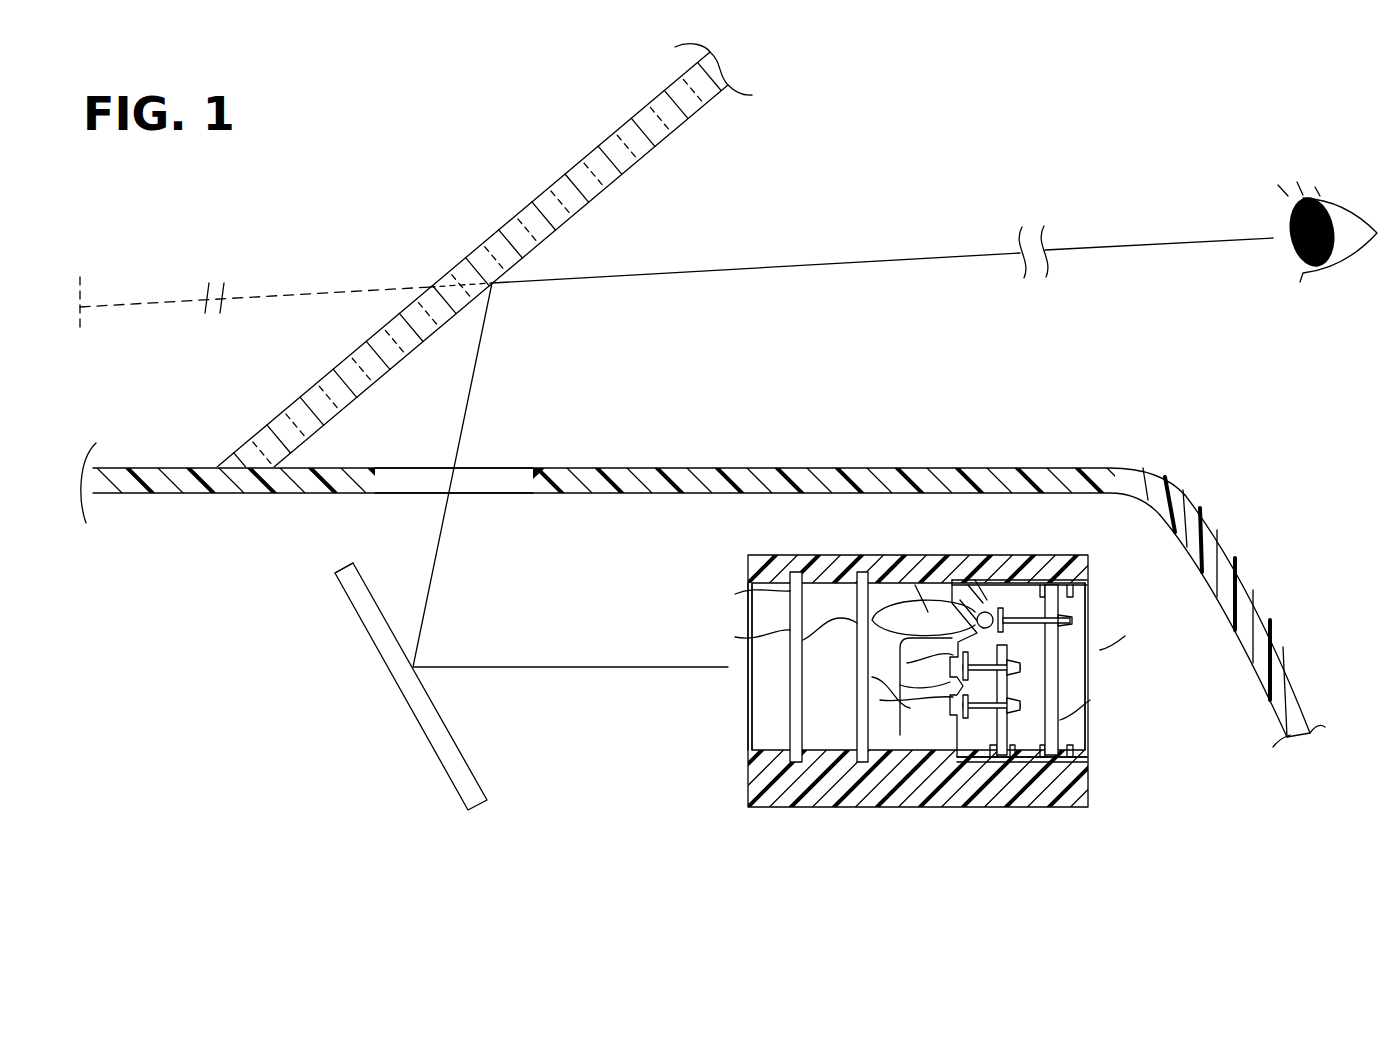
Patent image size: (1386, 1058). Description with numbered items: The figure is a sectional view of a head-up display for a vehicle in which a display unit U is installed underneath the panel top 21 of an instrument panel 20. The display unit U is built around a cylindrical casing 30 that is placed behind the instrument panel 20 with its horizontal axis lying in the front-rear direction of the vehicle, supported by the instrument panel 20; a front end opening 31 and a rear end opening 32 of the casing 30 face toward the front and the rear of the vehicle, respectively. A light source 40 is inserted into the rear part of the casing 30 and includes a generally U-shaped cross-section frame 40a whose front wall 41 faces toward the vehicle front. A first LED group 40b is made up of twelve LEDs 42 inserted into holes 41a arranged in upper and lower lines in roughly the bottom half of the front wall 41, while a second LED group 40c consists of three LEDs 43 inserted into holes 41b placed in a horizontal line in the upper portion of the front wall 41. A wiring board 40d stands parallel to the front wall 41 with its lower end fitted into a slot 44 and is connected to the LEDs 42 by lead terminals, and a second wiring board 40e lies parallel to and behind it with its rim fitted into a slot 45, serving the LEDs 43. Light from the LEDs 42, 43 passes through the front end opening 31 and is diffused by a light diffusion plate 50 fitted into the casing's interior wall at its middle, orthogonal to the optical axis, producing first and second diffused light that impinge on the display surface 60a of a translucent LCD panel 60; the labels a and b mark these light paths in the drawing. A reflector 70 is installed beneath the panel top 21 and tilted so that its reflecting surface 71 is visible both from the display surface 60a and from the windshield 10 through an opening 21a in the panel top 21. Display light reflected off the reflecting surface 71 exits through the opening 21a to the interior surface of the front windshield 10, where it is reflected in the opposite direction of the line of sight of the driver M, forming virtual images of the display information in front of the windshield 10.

The front windshield 10 is at (660, 158).
The instrument panel 20 is at (1245, 557).
The panel top 21 is at (895, 478).
The opening of the panel top 21a is at (533, 494).
The cylindrical casing 30 is at (835, 556).
The front end opening 31 is at (748, 592).
The rear end opening 32 is at (1078, 592).
The light source 40 is at (1075, 657).
The frame 40a is at (1012, 582).
The first LED group 40b is at (953, 740).
The second LED group 40c is at (968, 590).
The wiring board 40d is at (1013, 728).
The wiring board 40e is at (1062, 732).
The front wall 41 is at (960, 740).
The holes 41a is at (950, 718).
The holes 41b is at (915, 585).
The LEDs 42 is at (1020, 668).
The LEDs 43 is at (985, 610).
The slot 44 is at (1018, 762).
The slot 45 is at (1087, 758).
The light diffusion plate 50 is at (852, 730).
The translucent LCD panel 60 is at (785, 702).
The display surface 60a is at (748, 632).
The reflector 70 is at (500, 780).
The reflecting surface 71 is at (378, 598).
The driver M is at (1343, 192).
The display unit U is at (1072, 548).
The air flow a is at (907, 665).
The air flow b is at (890, 618).